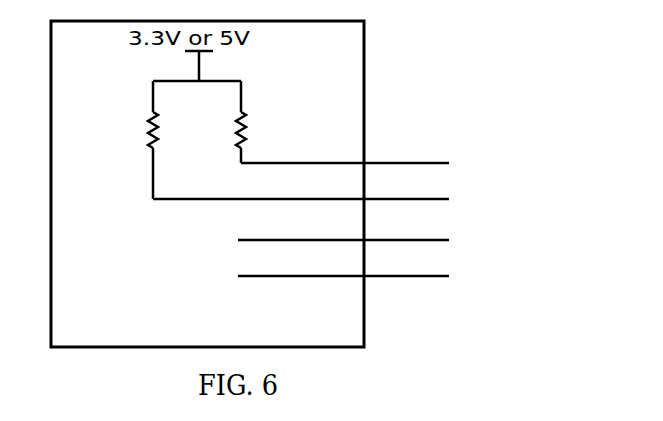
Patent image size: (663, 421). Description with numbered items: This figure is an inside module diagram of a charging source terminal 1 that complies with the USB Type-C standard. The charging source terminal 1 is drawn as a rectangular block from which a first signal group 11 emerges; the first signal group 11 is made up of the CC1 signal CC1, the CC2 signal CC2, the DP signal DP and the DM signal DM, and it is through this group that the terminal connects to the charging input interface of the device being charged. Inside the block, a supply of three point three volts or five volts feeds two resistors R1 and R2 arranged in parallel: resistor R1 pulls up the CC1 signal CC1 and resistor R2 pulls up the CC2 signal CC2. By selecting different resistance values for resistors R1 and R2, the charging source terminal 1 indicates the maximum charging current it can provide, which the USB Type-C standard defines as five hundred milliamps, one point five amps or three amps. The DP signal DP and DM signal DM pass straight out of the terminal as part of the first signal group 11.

The charging source terminal 1 is at (207, 184).
The first signal group 11 is at (341, 209).
The resistor R1 is at (138, 140).
The resistor R2 is at (225, 122).
The CC1 signal CC1 is at (345, 150).
The CC2 signal CC2 is at (301, 187).
The DP signal DP is at (343, 228).
The DM signal DM is at (343, 265).